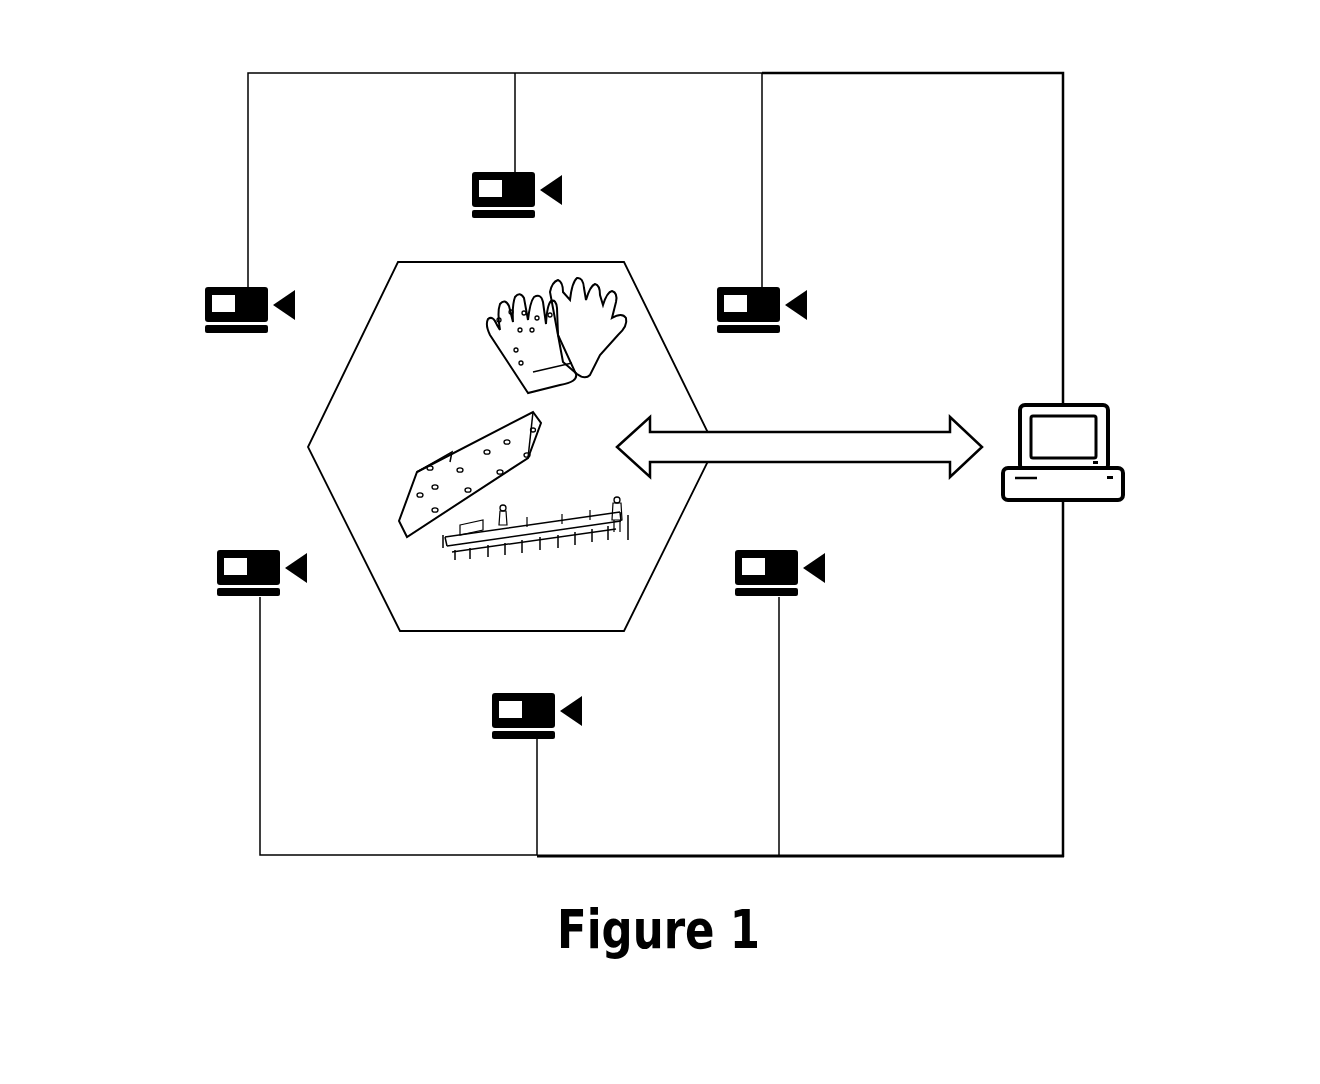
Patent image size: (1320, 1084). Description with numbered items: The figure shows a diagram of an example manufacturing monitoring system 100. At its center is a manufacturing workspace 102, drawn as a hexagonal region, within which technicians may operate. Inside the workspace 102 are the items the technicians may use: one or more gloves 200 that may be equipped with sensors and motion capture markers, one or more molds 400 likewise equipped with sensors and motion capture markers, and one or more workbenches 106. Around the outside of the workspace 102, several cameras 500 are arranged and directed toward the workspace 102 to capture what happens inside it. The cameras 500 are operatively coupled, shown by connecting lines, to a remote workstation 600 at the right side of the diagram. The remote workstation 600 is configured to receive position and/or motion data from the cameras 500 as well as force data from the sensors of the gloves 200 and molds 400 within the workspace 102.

The manufacturing monitoring system 100 is at (701, 448).
The manufacturing workspace 102 is at (305, 447).
The gloves 200 is at (483, 335).
The molds 400 is at (440, 445).
The workbenches 106 is at (540, 562).
The cameras 500 is at (762, 285).
The remote workstation 600 is at (1123, 452).